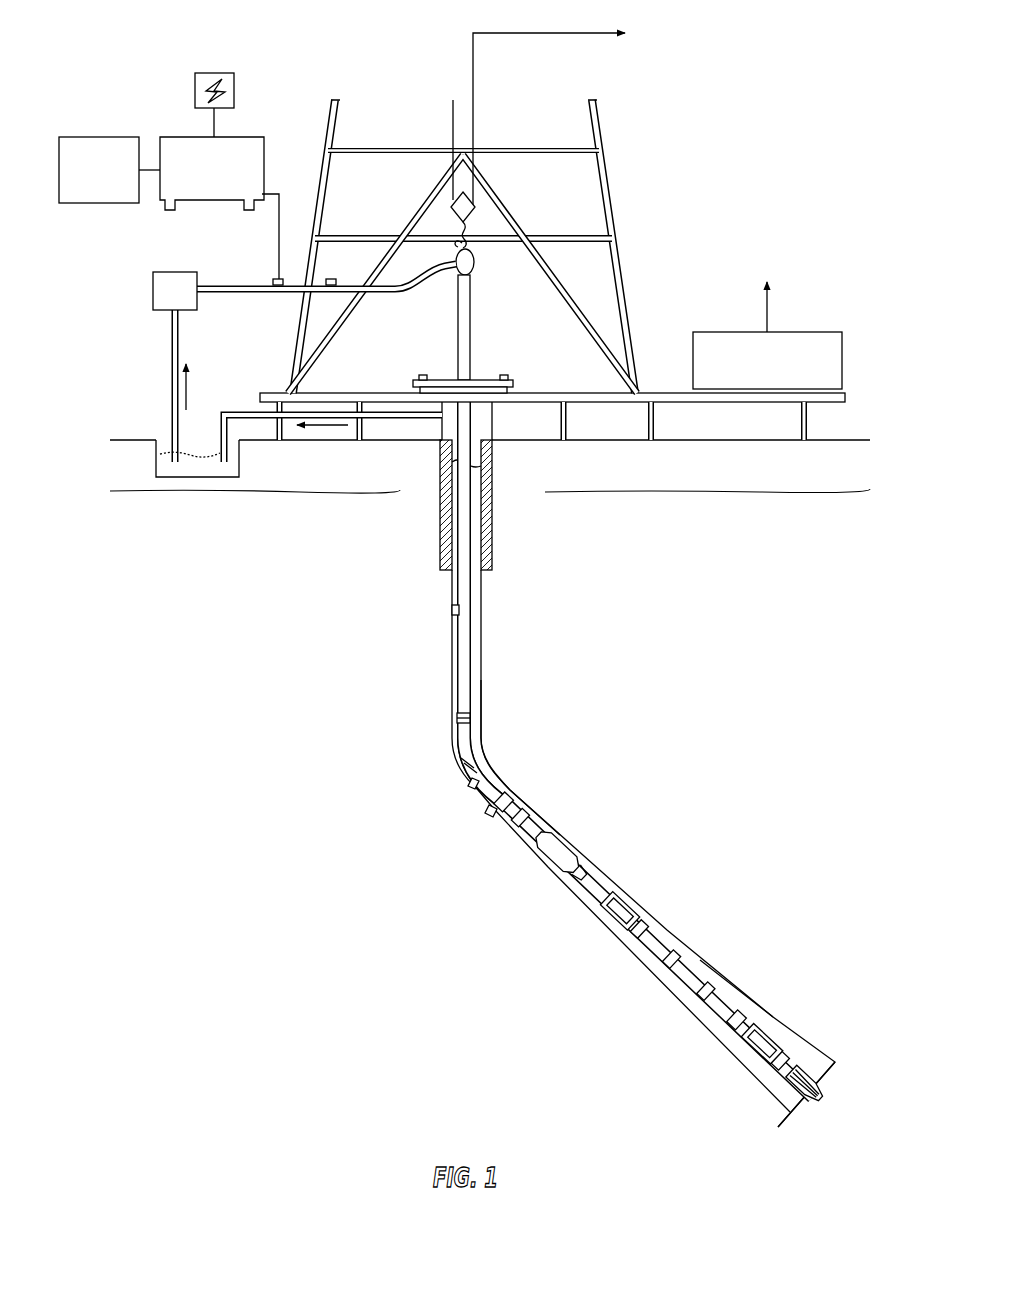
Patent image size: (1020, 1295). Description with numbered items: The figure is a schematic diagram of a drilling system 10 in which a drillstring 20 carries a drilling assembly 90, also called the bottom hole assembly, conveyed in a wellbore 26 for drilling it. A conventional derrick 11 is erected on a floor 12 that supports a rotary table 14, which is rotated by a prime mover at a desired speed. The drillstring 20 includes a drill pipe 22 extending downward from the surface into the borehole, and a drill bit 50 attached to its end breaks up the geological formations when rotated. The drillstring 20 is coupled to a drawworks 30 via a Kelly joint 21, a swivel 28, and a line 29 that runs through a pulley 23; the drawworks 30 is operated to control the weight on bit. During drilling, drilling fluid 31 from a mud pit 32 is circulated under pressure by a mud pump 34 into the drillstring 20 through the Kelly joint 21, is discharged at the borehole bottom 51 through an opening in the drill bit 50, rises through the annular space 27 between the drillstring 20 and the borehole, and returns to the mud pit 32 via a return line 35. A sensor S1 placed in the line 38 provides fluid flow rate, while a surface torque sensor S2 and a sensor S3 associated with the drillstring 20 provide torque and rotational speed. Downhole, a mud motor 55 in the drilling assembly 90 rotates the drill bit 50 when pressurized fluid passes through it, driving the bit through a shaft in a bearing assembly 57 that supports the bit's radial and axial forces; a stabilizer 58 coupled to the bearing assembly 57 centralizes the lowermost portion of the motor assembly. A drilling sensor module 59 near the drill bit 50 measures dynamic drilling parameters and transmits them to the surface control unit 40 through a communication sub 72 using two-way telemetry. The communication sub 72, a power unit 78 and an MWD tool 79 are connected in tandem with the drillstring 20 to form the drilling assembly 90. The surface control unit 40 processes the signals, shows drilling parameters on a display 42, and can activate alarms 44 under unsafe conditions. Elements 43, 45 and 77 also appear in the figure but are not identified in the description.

The drilling system 10 is at (391, 43).
The derrick 11 is at (622, 246).
The floor 12 is at (646, 393).
The rotary table 14 is at (478, 378).
The drillstring 20 is at (480, 660).
The Kelly joint 21 is at (472, 308).
The drill pipe 22 is at (450, 640).
The pulley 23 is at (466, 207).
The wellbore 26 is at (492, 745).
The annular space 27 is at (512, 773).
The swivel 28 is at (455, 270).
The line 29 is at (475, 118).
The drawworks 30 is at (808, 332).
The drilling fluid 31 is at (158, 446).
The mud pit 32 is at (190, 476).
The mud pump 34 is at (170, 272).
The return line 35 is at (404, 420).
The line 38 is at (272, 294).
The surface control unit 40 is at (196, 137).
The display/monitor 42 is at (210, 73).
The sensor 43 is at (278, 279).
The alarms 44 is at (108, 203).
The signal line 45 is at (266, 192).
The drill bit 50 is at (803, 1060).
The borehole bottom 51 is at (790, 1115).
The downhole motor 55 is at (664, 924).
The bearing assembly 57 is at (775, 1021).
The stabilizer 58 is at (787, 1042).
The drilling sensor module 59 is at (770, 1063).
The communication sub 72 is at (462, 752).
The mud motor 77 is at (546, 866).
The power unit 78 is at (472, 786).
The MWD tool 79 is at (488, 813).
The drilling assembly 90 is at (690, 828).
The sensor S1 is at (330, 279).
The surface torque sensor S2 is at (505, 375).
The sensor S3 is at (423, 375).